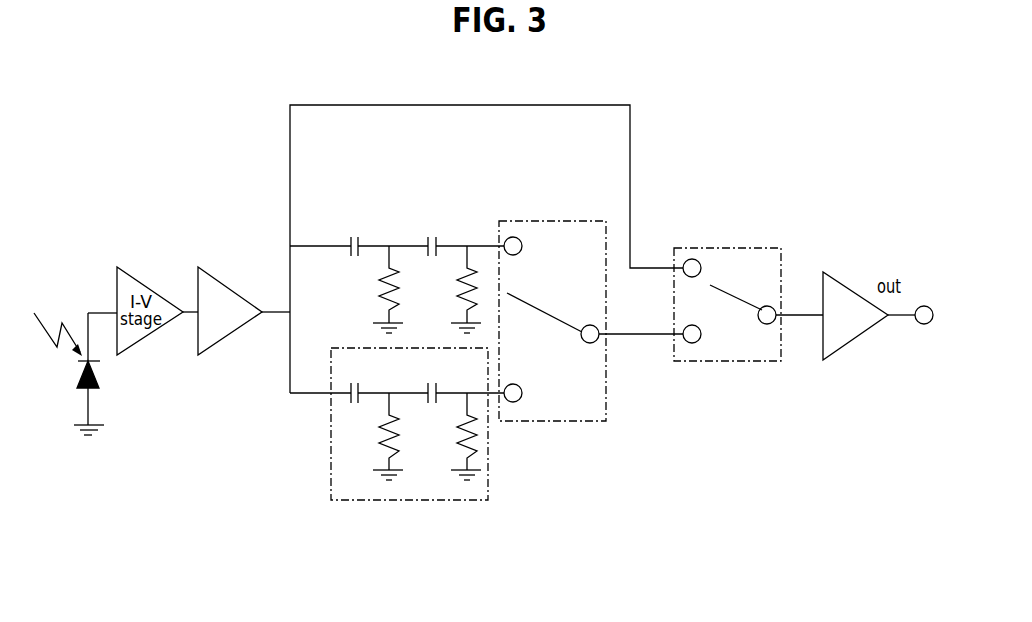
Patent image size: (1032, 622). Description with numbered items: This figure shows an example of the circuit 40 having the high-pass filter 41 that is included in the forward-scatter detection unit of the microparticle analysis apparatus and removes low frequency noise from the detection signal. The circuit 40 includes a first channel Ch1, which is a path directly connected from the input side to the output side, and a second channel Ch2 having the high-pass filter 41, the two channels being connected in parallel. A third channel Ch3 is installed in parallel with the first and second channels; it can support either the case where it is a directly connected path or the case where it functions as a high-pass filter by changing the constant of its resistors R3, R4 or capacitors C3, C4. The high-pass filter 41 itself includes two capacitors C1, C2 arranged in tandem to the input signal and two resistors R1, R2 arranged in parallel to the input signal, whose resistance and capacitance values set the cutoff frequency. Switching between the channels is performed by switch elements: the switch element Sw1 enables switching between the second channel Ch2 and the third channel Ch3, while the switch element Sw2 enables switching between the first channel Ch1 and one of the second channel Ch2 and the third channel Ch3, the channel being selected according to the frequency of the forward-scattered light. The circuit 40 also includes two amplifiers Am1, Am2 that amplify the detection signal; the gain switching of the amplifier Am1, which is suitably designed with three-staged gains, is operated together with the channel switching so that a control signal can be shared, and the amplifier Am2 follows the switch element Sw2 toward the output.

The circuit having a high-pass filter 40 is at (702, 163).
The high-pass filter 41 is at (415, 503).
The amplifier Am1 is at (215, 348).
The amplifier Am2 is at (853, 343).
The switch element Sw1 is at (590, 422).
The switch element Sw2 is at (730, 362).
The capacitor C1 is at (355, 381).
The capacitor C2 is at (430, 381).
The capacitor C3 is at (359, 231).
The capacitor C4 is at (436, 231).
The resistor R1 is at (375, 436).
The resistor R2 is at (453, 436).
The resistor R3 is at (375, 289).
The resistor R4 is at (454, 289).
The first channel Ch1 is at (486, 186).
The second channel Ch2 is at (320, 409).
The third channel Ch3 is at (320, 319).